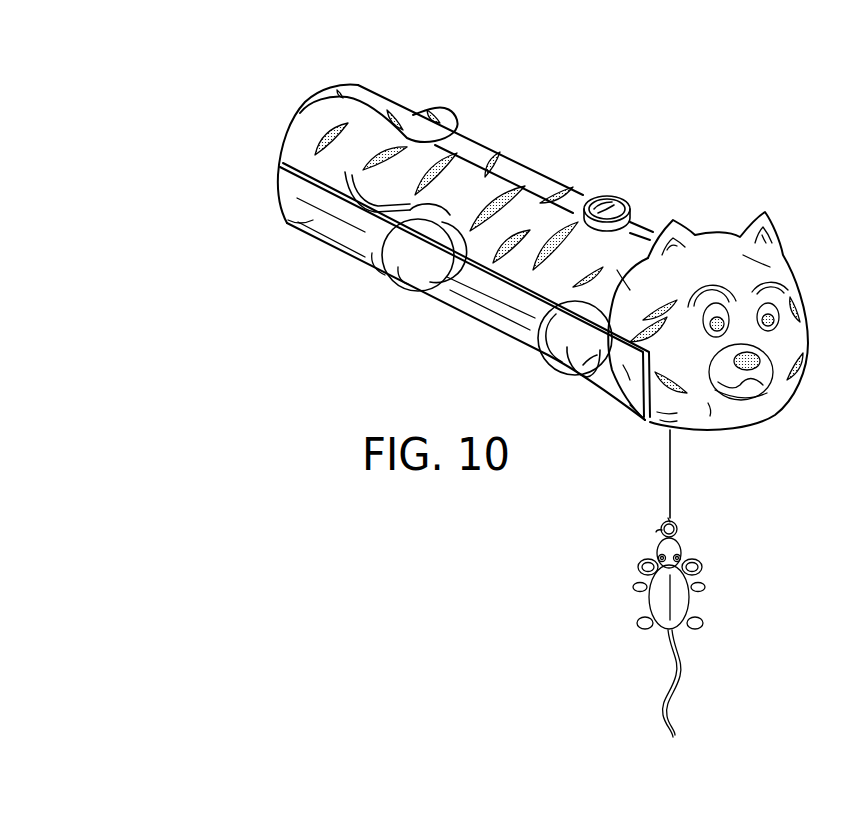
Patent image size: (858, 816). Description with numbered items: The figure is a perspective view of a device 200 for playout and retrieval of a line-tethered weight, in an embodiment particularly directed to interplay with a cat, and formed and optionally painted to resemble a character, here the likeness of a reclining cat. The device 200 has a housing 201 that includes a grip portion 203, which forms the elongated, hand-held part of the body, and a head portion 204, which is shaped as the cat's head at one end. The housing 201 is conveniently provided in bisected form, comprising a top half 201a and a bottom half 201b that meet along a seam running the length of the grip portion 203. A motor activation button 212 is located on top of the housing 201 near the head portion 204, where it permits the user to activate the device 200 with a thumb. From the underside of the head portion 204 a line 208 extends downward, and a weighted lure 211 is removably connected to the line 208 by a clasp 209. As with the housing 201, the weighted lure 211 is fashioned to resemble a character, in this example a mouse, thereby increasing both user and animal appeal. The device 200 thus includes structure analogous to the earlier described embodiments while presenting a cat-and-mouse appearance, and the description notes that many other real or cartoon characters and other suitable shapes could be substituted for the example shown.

The device 200 is at (553, 118).
The housing 201 is at (163, 140).
The top half 201a is at (340, 157).
The bottom half 201b is at (313, 220).
The grip portion 203 is at (487, 178).
The head portion 204 is at (710, 260).
The motor activation button 212 is at (612, 203).
The line 208 is at (670, 478).
The clasp 209 is at (677, 525).
The weighted lure 211 is at (690, 605).